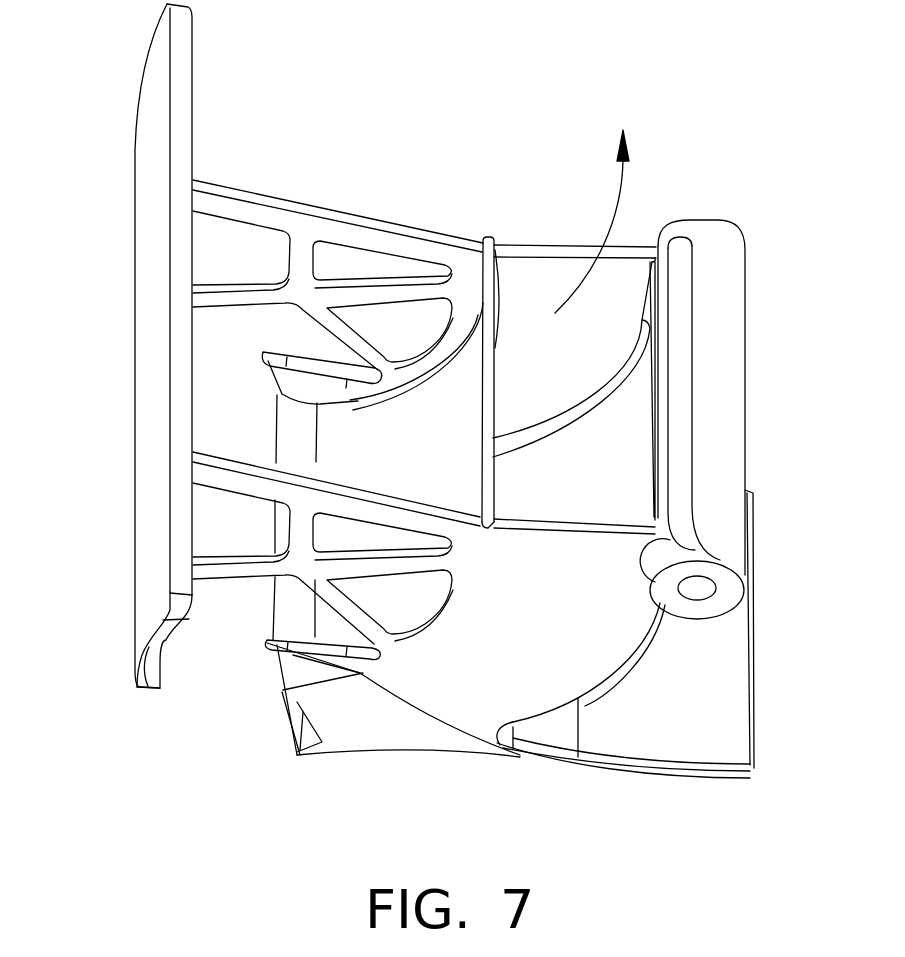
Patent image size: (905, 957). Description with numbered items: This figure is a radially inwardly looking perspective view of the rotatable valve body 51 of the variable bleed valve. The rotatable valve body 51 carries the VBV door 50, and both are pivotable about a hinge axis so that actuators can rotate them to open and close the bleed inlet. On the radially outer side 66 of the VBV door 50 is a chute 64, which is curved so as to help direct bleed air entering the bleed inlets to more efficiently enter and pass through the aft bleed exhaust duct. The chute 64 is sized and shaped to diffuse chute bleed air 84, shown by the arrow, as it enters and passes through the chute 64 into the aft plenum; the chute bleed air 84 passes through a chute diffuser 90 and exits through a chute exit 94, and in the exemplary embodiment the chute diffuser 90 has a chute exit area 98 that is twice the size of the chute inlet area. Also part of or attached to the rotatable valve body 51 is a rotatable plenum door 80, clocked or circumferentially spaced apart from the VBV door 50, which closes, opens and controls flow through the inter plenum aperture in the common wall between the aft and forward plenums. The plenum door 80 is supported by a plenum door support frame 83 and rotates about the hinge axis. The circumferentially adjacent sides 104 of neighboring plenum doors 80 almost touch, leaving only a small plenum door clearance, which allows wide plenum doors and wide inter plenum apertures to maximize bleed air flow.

The VBV door 50 is at (550, 767).
The rotatable valve body 51 is at (340, 814).
The chute 64 is at (598, 637).
The radially outer side 66 is at (543, 733).
The rotatable plenum door 80 is at (183, 58).
The plenum door support frame 83 is at (390, 220).
The chute bleed air 84 is at (623, 188).
The chute diffuser 90 is at (628, 403).
The chute exit 94 is at (528, 302).
The chute exit area 98 is at (607, 481).
The circumferentially adjacent sides 104 is at (137, 687).